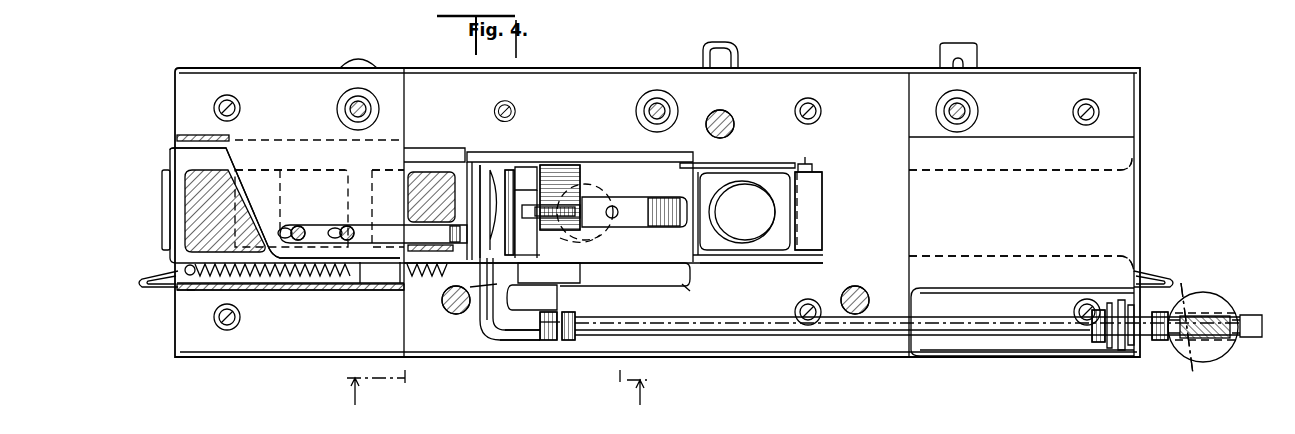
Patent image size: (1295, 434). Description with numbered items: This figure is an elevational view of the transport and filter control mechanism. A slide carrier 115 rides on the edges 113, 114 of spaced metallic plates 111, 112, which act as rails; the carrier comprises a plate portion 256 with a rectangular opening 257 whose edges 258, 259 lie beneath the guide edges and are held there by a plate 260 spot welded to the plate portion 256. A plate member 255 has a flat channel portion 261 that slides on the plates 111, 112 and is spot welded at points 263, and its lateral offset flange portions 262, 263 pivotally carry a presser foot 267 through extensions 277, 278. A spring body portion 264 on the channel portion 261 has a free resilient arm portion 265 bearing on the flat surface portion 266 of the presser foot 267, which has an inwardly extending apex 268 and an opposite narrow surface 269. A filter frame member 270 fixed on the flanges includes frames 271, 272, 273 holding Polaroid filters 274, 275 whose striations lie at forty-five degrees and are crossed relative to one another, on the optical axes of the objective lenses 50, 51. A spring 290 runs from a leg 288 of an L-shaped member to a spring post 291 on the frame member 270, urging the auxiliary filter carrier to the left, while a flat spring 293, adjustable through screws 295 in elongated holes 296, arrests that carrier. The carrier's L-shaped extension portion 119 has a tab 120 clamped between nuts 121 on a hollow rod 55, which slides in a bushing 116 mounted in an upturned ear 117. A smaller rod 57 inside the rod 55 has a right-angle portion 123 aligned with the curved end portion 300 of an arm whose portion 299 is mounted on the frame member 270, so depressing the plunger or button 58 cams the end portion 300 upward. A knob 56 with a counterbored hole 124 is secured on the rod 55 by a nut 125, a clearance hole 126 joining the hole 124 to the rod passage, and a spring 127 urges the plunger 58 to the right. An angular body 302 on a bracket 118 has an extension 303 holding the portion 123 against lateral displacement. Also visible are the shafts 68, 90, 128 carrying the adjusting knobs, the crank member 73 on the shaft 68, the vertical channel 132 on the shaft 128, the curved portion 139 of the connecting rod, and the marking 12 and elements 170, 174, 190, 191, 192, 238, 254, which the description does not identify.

The section line 12- 12 is at (496, 392).
The objective lens 50 is at (585, 236).
The objective lens 51 is at (613, 213).
The rod 55 is at (735, 337).
The knob 56 is at (1220, 352).
The smaller rod 57 is at (524, 342).
The plunger 58 is at (1252, 320).
The shaft 68 is at (350, 106).
The crank member 73 is at (357, 62).
The shaft 90 is at (648, 106).
The metallic plate 111 is at (887, 160).
The metallic plate 112 is at (850, 260).
The edge 113 is at (909, 172).
The edge 114 is at (895, 260).
The slide carrier 115 is at (685, 282).
The bushing 116 is at (1097, 343).
The upturned ear 117 is at (1130, 350).
The bracket 118 is at (580, 270).
The L-shaped extension portion 119 is at (508, 342).
The tab 120 is at (560, 312).
The nuts 121 is at (566, 342).
The right-angle portion 123 is at (480, 318).
The counterbored hole 124 is at (1200, 293).
The nut 125 is at (1160, 342).
The clearance hole 126 is at (1183, 290).
The spring 127 is at (1200, 337).
The shaft 128 is at (965, 105).
The vertical channel 132 is at (975, 50).
The curved portion 139 is at (728, 48).
The retaining clip 170 is at (1158, 272).
The retaining clip 174 is at (160, 274).
The pivot pin 190 is at (441, 303).
The pivot pin 191 is at (858, 294).
The pivot pin 192 is at (720, 118).
The housing 238 is at (856, 61).
The base plate 254 is at (824, 364).
The plate member 255 is at (582, 180).
The plate portion 256 is at (820, 180).
The rectangular opening 257 is at (768, 175).
The edge 258 is at (766, 168).
The edge 259 is at (713, 262).
The plate 260 is at (805, 156).
The flat channel portion 261 is at (566, 172).
The lateral offset flange portion 262 is at (612, 158).
The lateral offset flange portion 263 is at (633, 275).
The spring body portion 264 is at (620, 205).
The free resilient arm portion 265 is at (549, 201).
The flat surface portion 266 is at (524, 170).
The presser foot 267 is at (510, 178).
The apex 268 is at (490, 182).
The narrow surface 269 is at (478, 182).
The filter frame member 270 is at (414, 148).
The frame 271 is at (388, 168).
The frame 272 is at (300, 170).
The frame 273 is at (185, 168).
The Polaroid filter 274 is at (412, 190).
The Polaroid filter 275 is at (190, 213).
The extension 277 is at (533, 250).
The extension 278 is at (537, 165).
The leg 288 is at (462, 258).
The spring 290 is at (280, 278).
The spring post 291 is at (187, 292).
The flat spring 293 is at (392, 232).
The screws 295 is at (348, 226).
The elongated holes 296 is at (316, 228).
The portion 299 is at (335, 278).
The curved end portion 300 is at (452, 286).
The angular body 302 is at (532, 297).
The extension 303 is at (478, 300).